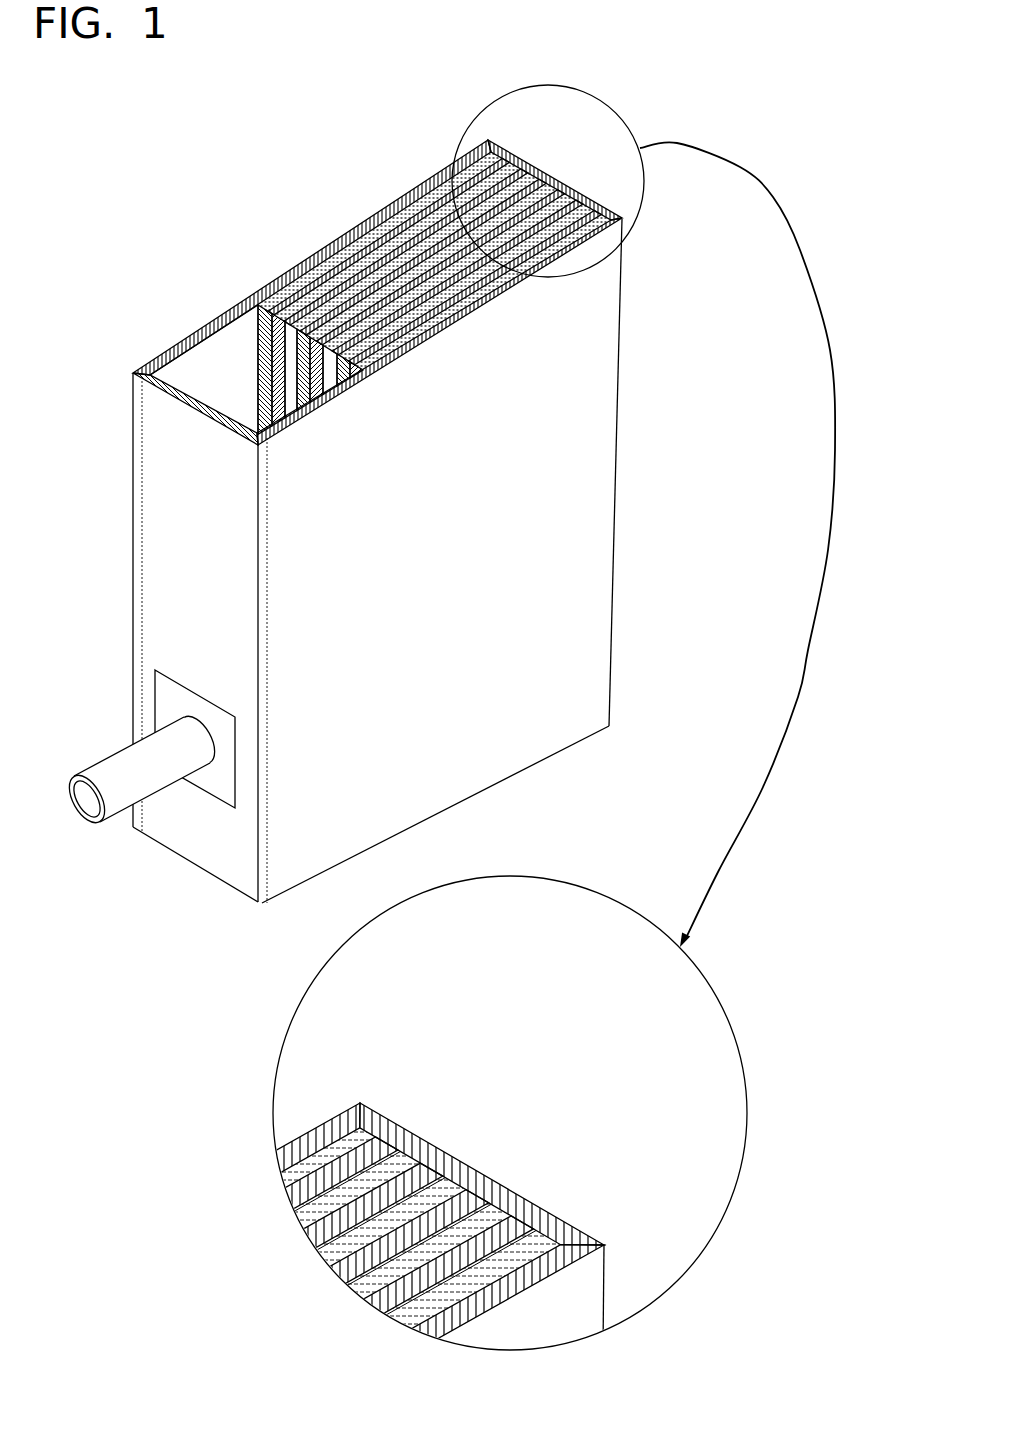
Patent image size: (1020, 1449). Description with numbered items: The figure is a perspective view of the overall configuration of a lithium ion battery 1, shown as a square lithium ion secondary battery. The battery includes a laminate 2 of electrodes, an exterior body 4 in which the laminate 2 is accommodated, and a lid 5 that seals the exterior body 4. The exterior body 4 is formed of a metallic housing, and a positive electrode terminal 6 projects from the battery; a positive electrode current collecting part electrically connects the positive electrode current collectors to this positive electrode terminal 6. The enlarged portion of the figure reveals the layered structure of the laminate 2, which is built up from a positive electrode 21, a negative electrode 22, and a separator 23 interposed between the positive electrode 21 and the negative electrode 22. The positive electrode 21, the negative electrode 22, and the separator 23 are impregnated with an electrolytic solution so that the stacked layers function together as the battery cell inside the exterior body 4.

The lithium ion battery 1 is at (436, 101).
The laminate 2 is at (210, 358).
The exterior body 4 is at (577, 520).
The lid 5 is at (178, 605).
The positive electrode terminal 6 is at (117, 763).
The positive electrode 21 is at (367, 1152).
The negative electrode 22 is at (325, 1152).
The separator 23 is at (357, 1150).